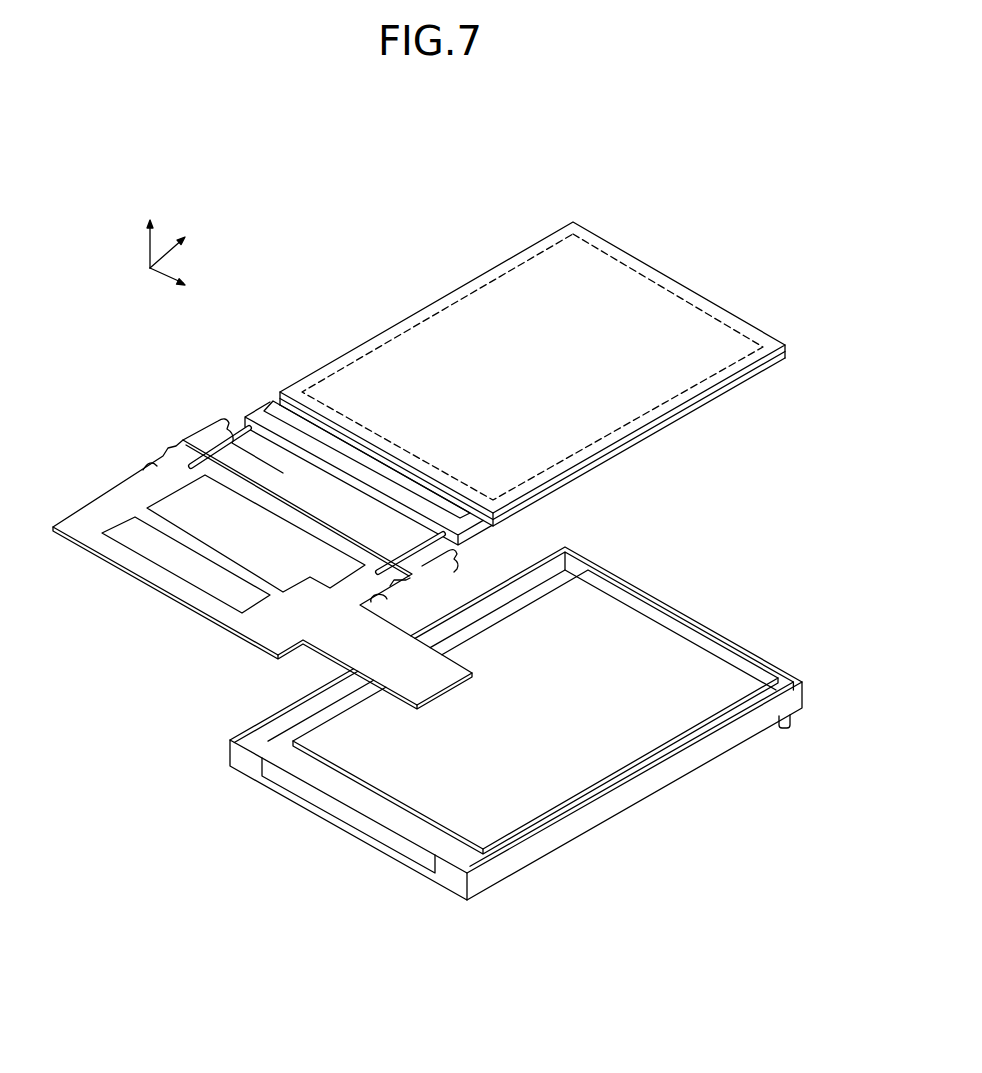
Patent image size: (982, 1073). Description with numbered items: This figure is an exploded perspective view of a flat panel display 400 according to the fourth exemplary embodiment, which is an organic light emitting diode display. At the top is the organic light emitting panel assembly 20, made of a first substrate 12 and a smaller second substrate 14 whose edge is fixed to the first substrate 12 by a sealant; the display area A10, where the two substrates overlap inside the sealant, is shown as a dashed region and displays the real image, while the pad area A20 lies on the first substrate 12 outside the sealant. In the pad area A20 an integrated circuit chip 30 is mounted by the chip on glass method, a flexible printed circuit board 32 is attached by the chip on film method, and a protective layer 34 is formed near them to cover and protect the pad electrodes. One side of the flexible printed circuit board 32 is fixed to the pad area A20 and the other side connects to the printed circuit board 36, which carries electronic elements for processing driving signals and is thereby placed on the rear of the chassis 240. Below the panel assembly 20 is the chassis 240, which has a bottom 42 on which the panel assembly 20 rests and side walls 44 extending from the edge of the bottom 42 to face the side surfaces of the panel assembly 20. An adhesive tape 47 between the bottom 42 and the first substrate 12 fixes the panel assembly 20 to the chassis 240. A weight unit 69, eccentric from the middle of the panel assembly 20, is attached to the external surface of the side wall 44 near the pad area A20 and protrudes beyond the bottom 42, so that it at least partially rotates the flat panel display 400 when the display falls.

The flat panel display 400 is at (379, 218).
The display area A10 is at (615, 295).
The second substrate 14 is at (683, 290).
The organic light emitting panel assembly 20 is at (548, 362).
The first substrate 12 is at (748, 380).
The integrated circuit chip 30 is at (390, 448).
The pad area A20 is at (477, 523).
The protective layer 34 is at (240, 462).
The flexible printed circuit board 32 is at (197, 443).
The printed circuit board 36 is at (262, 548).
The bottom 42 is at (516, 723).
The side walls 44 is at (582, 816).
The chassis 240 is at (633, 805).
The weight unit 69 is at (782, 724).
The adhesive tape 47 is at (653, 645).